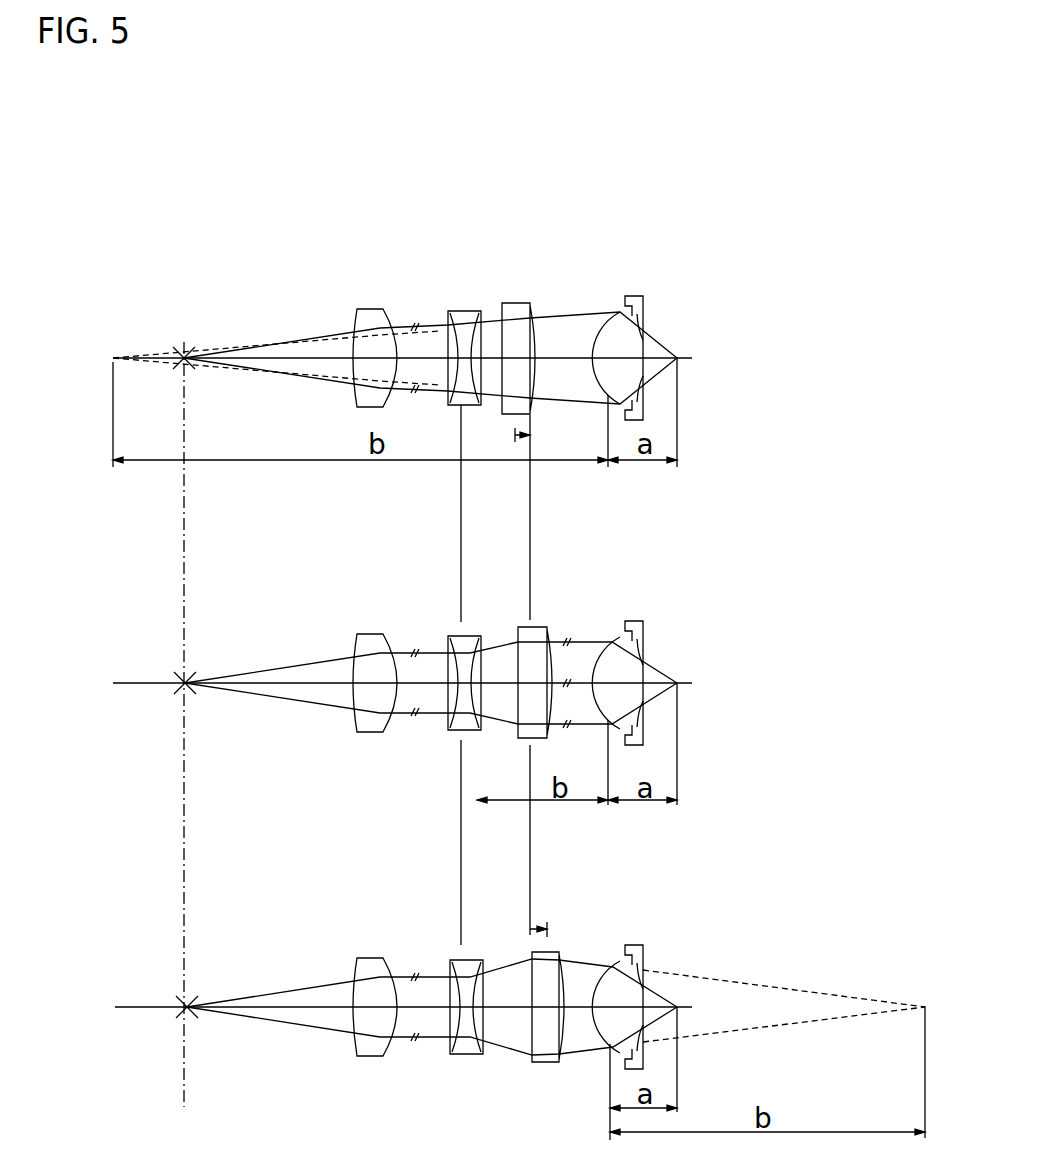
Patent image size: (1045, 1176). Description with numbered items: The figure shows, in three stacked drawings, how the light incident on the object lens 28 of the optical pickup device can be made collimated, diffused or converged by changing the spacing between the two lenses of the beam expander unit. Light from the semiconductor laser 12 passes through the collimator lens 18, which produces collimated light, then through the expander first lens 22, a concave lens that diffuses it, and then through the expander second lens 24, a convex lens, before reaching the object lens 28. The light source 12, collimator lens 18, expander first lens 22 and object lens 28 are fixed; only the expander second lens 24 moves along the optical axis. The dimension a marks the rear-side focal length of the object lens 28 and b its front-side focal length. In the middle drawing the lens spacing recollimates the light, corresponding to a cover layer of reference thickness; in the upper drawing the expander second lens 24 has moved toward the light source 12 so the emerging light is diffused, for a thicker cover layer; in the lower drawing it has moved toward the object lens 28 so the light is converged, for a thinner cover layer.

The semiconductor laser 12 is at (184, 1015).
The collimator lens 18 is at (357, 1049).
The expander first lens 22 is at (455, 1054).
The expander second lens 24 is at (535, 1062).
The object lens 28 is at (637, 945).